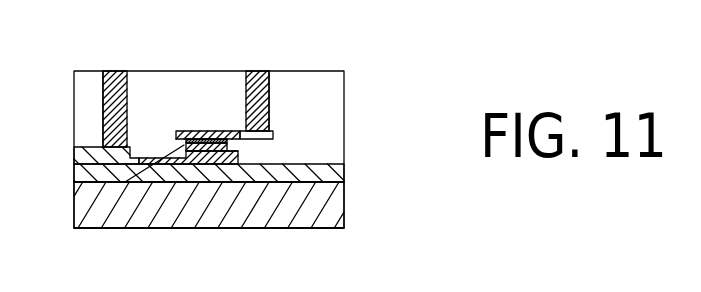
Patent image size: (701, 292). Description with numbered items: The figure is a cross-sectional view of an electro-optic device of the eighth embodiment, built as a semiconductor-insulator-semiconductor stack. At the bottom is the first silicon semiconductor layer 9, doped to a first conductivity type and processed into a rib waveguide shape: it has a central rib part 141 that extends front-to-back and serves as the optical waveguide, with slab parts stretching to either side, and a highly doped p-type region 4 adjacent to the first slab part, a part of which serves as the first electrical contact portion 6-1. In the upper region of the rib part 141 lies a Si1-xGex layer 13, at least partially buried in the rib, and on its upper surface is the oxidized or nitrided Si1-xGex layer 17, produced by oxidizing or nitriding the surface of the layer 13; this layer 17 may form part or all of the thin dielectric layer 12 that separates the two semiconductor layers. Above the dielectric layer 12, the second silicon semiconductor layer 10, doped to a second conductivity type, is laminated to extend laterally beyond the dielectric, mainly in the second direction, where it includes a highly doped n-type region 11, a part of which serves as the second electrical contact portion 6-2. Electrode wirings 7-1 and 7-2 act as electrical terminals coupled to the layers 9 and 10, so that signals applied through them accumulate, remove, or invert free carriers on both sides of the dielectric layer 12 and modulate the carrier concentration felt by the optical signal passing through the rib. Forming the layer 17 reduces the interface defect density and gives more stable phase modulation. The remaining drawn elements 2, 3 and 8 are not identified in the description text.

The insulating layer 2 is at (333, 170).
The substrate 3 is at (235, 213).
The p-type region 4 is at (82, 162).
The first electrical contact portion 6-1 is at (103, 137).
The second electrical contact portion 6-2 is at (268, 113).
The electrode wiring 7-1 is at (107, 71).
The electrode wiring 7-2 is at (257, 71).
The resin layer 8 is at (187, 75).
The first silicon semiconductor layer 9 is at (218, 164).
The second silicon semiconductor layer 10 is at (208, 131).
The n-type region 11 is at (273, 135).
The dielectric layer 12 is at (84, 212).
The Si1-xGex layer 13 is at (205, 164).
The oxidized or nitrided Si1-xGex layer 17 is at (227, 143).
The rib part 141 is at (207, 164).